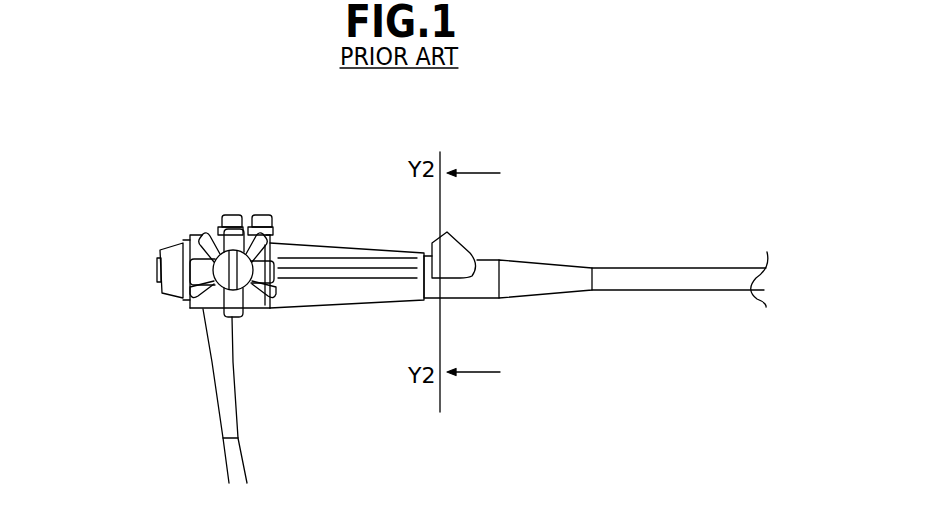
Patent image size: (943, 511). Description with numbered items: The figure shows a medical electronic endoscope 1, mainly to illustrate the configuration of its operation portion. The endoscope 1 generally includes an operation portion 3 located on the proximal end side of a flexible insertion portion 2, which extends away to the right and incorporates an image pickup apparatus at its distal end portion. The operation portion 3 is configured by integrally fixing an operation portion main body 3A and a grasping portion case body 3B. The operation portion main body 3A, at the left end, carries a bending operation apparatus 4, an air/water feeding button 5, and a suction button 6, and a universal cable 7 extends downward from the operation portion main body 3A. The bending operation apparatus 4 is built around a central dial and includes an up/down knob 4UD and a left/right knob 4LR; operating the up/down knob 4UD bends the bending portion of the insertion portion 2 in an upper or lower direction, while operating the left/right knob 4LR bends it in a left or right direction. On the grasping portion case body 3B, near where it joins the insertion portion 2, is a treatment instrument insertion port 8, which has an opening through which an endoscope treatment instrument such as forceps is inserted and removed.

The endoscope 1 is at (532, 232).
The insertion portion 2 is at (688, 263).
The operation portion 3 is at (340, 331).
The operation portion main body 3A is at (279, 311).
The grasping portion case body 3B is at (358, 293).
The bending operation apparatus 4 is at (165, 328).
The left/right knob 4LR is at (193, 268).
The up/down knob 4UD is at (198, 308).
The air/water feeding button 5 is at (262, 206).
The suction button 6 is at (225, 206).
The universal cable 7 is at (215, 493).
The treatment instrument insertion port 8 is at (425, 233).